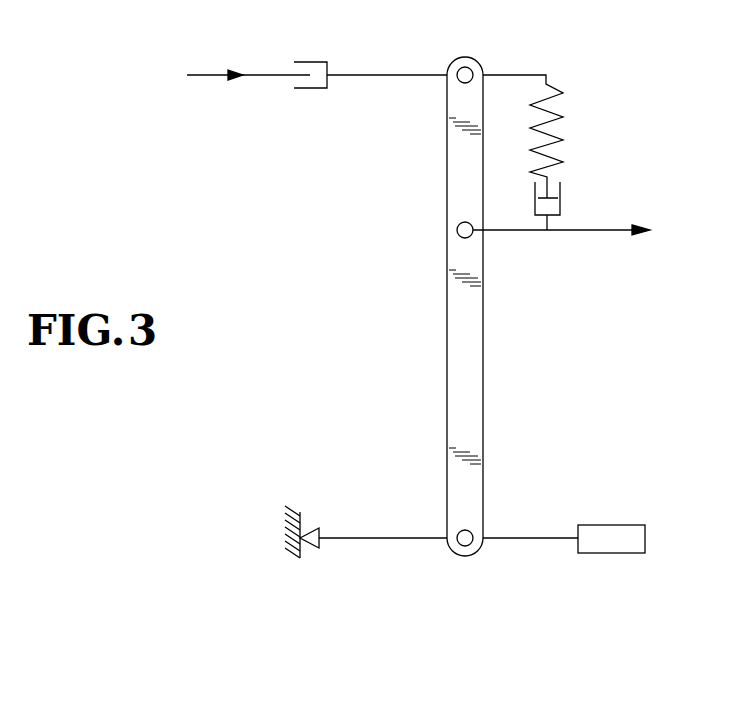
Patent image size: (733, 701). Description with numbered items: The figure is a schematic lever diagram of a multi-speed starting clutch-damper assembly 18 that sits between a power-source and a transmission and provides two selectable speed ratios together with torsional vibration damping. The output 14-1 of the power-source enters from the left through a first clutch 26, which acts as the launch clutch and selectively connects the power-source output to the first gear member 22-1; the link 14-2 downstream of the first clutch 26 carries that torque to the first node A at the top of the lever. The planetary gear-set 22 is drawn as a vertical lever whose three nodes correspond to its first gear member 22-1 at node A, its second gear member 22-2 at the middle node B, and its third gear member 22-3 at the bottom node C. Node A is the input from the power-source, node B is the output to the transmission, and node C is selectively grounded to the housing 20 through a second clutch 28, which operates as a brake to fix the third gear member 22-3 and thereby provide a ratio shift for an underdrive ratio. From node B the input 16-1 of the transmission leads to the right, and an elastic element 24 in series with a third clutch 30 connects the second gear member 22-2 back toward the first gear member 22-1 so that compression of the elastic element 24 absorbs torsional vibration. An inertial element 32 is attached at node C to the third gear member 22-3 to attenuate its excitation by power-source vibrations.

The output of the power-source 14-1 is at (266, 74).
The first clutch 26 is at (328, 64).
The input link second portion 14-2 is at (401, 74).
The first node A is at (466, 60).
The first gear member 22-1 is at (461, 84).
The second node B is at (466, 216).
The second gear member 22-2 is at (466, 240).
The planetary gear-set 22 is at (474, 306).
The third gear member 22-3 is at (466, 528).
The third node C is at (476, 545).
The clutch-damper assembly 18 is at (502, 302).
The elastic element 24 is at (560, 118).
The third clutch 30 is at (561, 198).
The input of the transmission 16-1 is at (573, 231).
The housing 20 is at (300, 520).
The second clutch 28 is at (320, 538).
The inertial element 32 is at (612, 525).